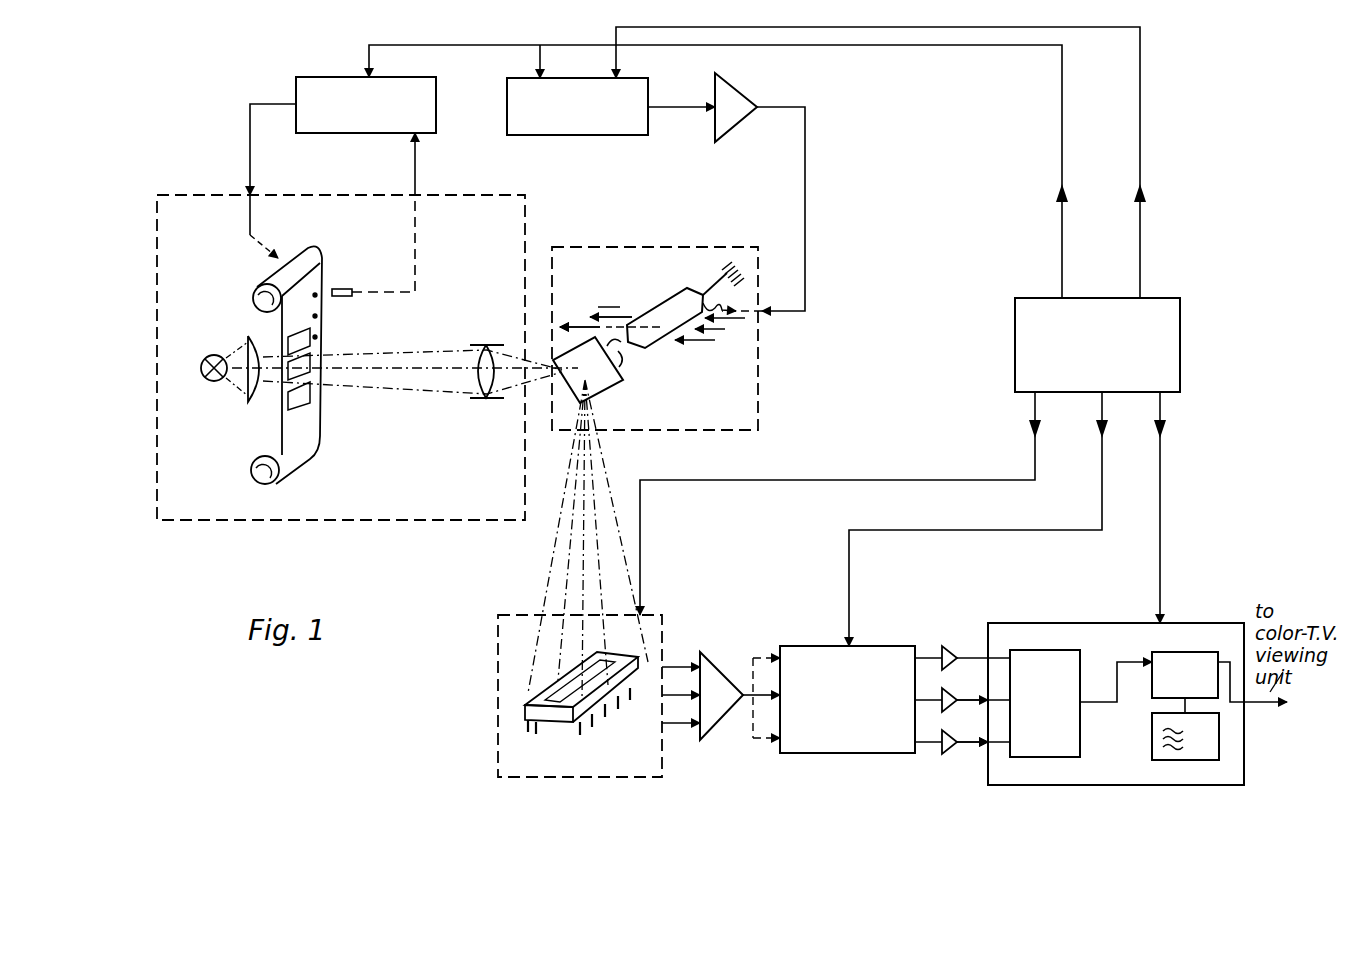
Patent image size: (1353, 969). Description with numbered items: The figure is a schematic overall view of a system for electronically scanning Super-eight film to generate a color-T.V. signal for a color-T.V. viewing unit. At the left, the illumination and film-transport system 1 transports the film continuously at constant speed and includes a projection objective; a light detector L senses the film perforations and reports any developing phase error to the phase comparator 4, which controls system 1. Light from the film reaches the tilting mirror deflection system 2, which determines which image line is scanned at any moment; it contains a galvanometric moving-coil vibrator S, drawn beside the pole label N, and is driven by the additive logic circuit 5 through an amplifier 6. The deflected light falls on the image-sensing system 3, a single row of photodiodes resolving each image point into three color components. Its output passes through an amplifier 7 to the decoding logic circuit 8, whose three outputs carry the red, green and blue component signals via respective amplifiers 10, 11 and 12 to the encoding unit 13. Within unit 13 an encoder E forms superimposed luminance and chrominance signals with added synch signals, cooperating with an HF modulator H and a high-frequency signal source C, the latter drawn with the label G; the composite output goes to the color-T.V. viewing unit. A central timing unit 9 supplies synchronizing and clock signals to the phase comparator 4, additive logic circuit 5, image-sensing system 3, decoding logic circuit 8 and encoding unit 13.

The illumination and film-transport system 1 is at (190, 210).
The tilting mirror deflection system 2 is at (760, 293).
The image-sensing system 3 is at (655, 629).
The phase comparator 4 is at (423, 90).
The additive logic circuit 5 is at (522, 89).
The amplifier 6 is at (761, 80).
The amplifier 7 is at (715, 660).
The decoding logic circuit 8 is at (858, 657).
The central timing unit 9 is at (1035, 312).
The amplifier 10 is at (950, 645).
The amplifier 11 is at (950, 695).
The amplifier 12 is at (950, 753).
The encoding unit 13 is at (1006, 632).
The light detector L is at (340, 291).
The galvanometric moving-coil vibrator S is at (673, 300).
The north pole N is at (710, 344).
The encoder E is at (1060, 752).
The HF modulator H is at (1160, 662).
The high-frequency signal source C is at (1160, 755).
The generator G is at (1203, 738).